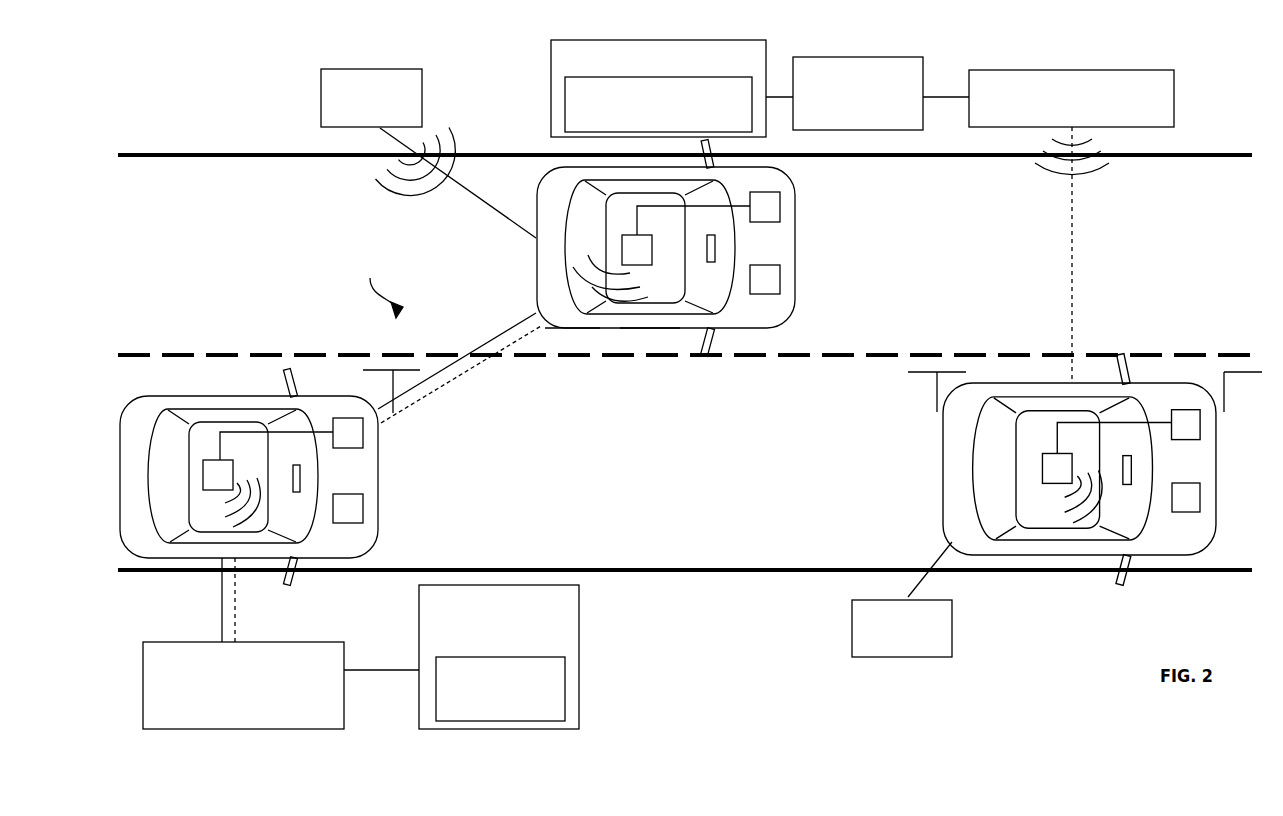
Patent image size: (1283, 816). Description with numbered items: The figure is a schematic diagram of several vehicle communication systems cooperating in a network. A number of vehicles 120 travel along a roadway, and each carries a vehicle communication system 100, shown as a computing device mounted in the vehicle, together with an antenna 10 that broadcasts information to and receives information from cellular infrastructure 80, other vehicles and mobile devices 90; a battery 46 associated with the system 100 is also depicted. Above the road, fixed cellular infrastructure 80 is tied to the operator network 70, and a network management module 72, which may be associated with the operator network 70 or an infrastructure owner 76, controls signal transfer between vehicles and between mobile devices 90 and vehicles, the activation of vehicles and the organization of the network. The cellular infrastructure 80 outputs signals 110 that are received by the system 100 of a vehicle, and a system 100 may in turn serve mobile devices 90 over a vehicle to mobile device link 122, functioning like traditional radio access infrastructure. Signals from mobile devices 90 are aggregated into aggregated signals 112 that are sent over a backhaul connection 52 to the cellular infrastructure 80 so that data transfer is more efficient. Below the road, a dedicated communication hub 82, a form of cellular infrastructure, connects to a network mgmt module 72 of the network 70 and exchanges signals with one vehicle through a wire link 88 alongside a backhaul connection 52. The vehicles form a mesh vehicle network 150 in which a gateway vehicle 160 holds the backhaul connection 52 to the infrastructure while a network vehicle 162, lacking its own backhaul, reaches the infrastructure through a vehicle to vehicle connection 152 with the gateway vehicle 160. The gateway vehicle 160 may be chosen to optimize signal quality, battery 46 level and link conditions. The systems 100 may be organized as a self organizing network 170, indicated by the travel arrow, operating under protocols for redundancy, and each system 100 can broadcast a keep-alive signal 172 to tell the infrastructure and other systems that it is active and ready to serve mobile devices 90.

The antenna 10 is at (1047, 453).
The battery 46 is at (1200, 497).
The backhaul connection 52 is at (1072, 287).
The operator network 70 is at (923, 70).
The network management module 72 is at (565, 112).
The infrastructure owner 76 is at (551, 68).
The cellular infrastructure 80 is at (1174, 97).
The dedicated communication hub 82 is at (293, 642).
The wire link 88 is at (222, 600).
The mobile device 90 is at (422, 105).
The vehicle communication system 100 is at (348, 448).
The signal 110 is at (405, 185).
The aggregated signals 112 is at (257, 483).
The vehicle 120 is at (160, 396).
The vehicle to mobile device link 122 is at (492, 214).
The mesh vehicle network 150 is at (463, 370).
The vehicle to vehicle connection 152 is at (468, 350).
The gateway vehicle 160 is at (207, 400).
The network vehicle 162 is at (648, 329).
The self organizing network 170 is at (378, 286).
The keep-alive signal 172 is at (563, 330).